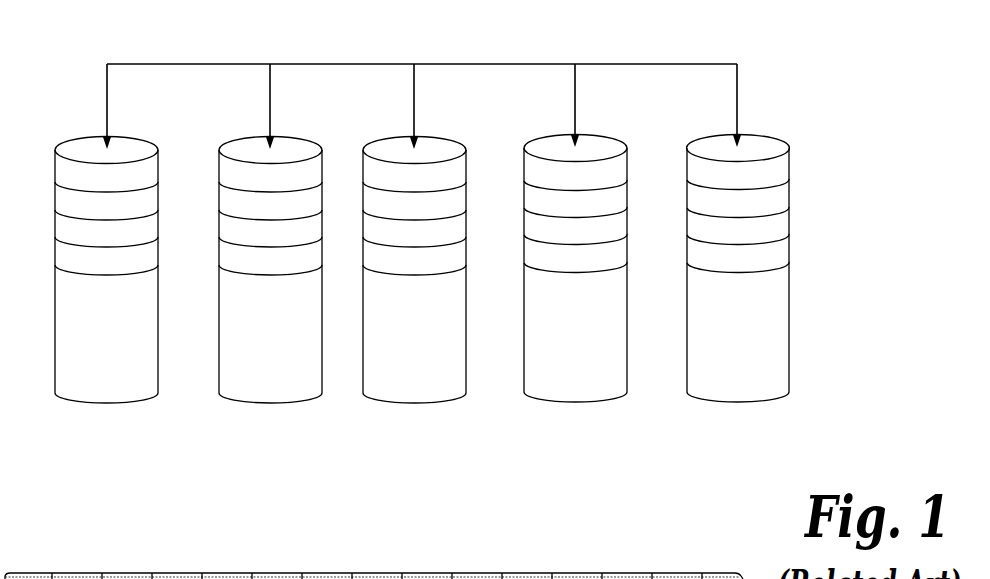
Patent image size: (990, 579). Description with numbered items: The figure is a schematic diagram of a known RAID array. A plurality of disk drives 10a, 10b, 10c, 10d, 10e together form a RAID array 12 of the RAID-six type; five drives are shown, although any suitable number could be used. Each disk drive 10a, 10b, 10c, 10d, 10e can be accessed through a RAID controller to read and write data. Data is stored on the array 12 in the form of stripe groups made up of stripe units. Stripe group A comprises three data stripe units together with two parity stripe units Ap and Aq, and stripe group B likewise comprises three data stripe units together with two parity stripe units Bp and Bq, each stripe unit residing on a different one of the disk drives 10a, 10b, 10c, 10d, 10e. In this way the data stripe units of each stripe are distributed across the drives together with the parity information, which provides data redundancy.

The disk drive 10a is at (110, 379).
The disk drive 10b is at (263, 378).
The disk drive 10c is at (400, 384).
The disk drive 10d is at (569, 378).
The disk drive 10e is at (715, 370).
The RAID 6 array 12 is at (660, 48).